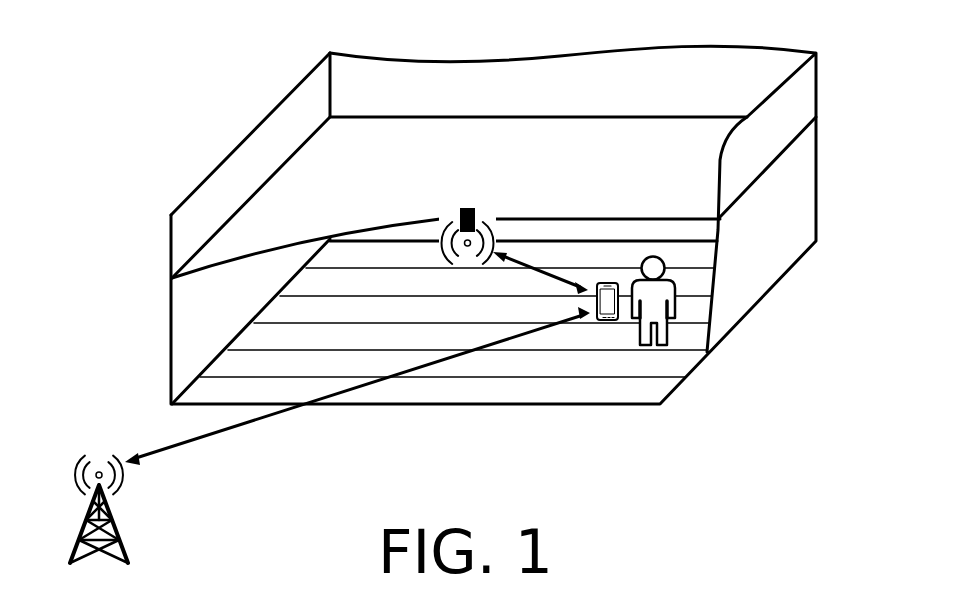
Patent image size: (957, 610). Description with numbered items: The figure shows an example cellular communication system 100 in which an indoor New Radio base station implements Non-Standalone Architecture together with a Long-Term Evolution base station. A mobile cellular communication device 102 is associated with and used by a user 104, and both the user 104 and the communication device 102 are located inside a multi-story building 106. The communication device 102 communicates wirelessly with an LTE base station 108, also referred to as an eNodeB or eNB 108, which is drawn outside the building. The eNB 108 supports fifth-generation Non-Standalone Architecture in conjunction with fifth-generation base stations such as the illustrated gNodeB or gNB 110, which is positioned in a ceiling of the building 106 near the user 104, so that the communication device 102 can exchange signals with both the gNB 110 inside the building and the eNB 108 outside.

The cellular communication system 100 is at (145, 72).
The mobile cellular communication device 102 is at (608, 322).
The user 104 is at (677, 307).
The multi-story building 106 is at (797, 167).
The LTE base station (eNB) 108 is at (110, 512).
The gNB 110 is at (483, 211).